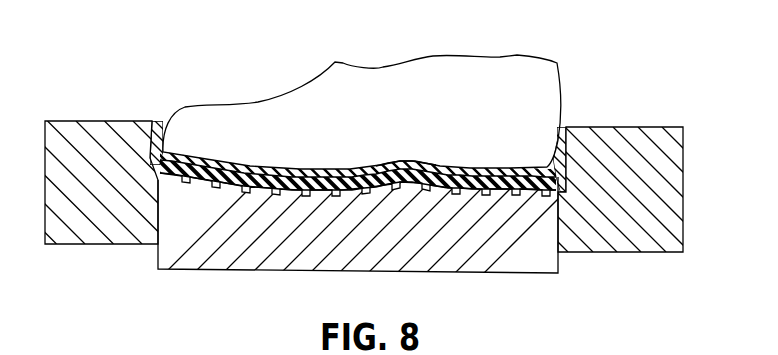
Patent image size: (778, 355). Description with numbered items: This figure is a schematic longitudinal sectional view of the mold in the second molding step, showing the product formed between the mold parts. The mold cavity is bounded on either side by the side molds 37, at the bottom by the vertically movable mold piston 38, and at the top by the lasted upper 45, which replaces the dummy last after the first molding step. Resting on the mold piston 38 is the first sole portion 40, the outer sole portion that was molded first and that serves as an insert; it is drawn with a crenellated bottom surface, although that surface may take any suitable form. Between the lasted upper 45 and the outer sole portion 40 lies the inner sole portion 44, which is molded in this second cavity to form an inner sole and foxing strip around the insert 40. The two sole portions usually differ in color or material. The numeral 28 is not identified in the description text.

The film 28 is at (268, 167).
The side molds 37 is at (124, 130).
The mold piston 38 is at (550, 258).
The first sole portion 40 is at (467, 156).
The inner sole portion 44 is at (383, 165).
The lasted upper 45 is at (352, 75).